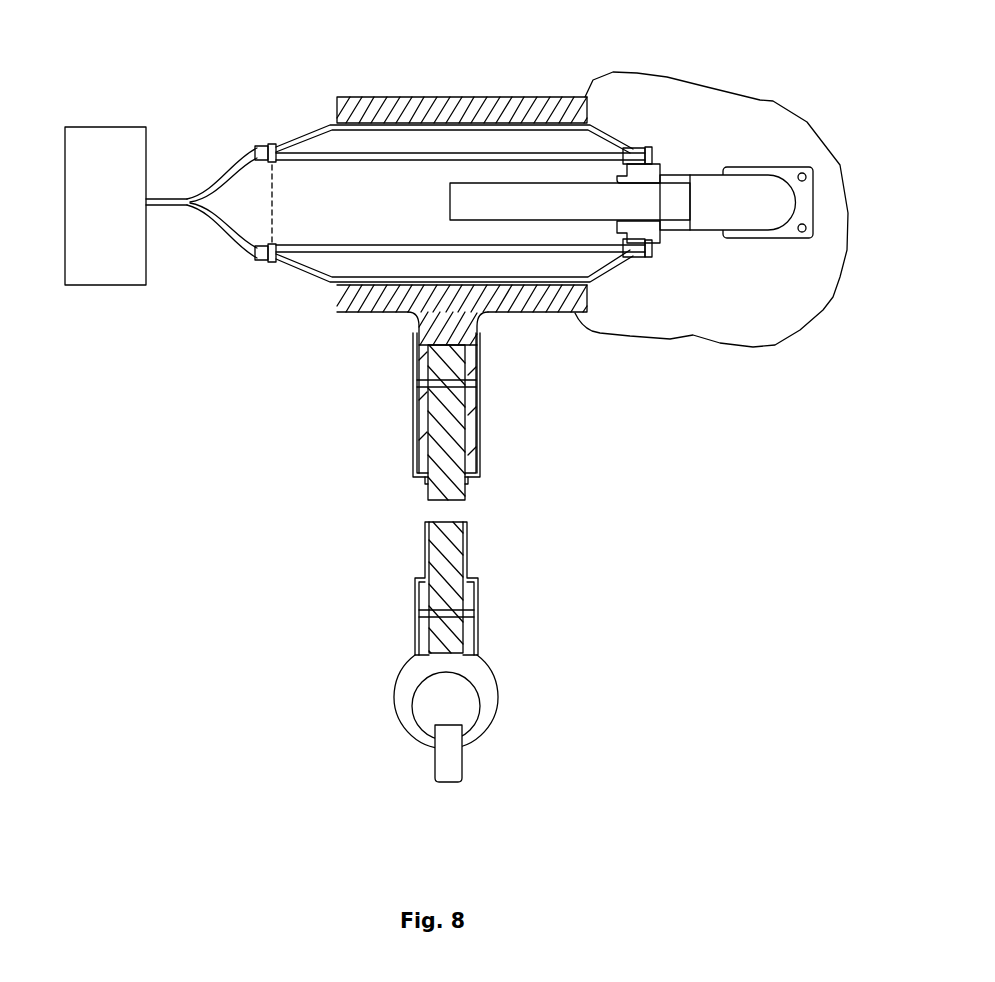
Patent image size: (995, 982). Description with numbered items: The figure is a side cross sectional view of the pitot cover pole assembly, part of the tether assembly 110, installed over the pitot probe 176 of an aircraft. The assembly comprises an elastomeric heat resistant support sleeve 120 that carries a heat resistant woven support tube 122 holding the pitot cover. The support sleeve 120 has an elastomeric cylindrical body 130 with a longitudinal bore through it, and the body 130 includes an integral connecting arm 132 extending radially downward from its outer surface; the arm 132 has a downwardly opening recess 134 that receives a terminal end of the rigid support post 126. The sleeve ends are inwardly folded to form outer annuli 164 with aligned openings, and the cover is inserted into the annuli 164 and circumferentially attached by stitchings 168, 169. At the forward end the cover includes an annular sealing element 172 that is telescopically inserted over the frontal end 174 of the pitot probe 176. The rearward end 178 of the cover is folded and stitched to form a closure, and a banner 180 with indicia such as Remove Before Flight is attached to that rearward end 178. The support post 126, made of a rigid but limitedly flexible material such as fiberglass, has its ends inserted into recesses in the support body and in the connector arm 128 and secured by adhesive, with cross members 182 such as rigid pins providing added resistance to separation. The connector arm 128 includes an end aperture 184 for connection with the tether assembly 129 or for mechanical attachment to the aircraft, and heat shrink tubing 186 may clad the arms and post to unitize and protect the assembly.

The tether assembly 110 is at (208, 500).
The support sleeve 120 is at (483, 95).
The support tube 122 is at (318, 136).
The support post 126 is at (445, 447).
The connector arm 128 is at (497, 702).
The tether assembly 129 is at (450, 762).
The cylindrical body 130 is at (402, 97).
The connecting arm 132 is at (433, 322).
The recess 134 is at (435, 408).
The outer annuli 164 is at (262, 145).
The stitching 168 is at (273, 150).
The stitching 169 is at (647, 148).
The annular sealing element 172 is at (635, 172).
The frontal end 174 is at (523, 207).
The pitot probe 176 is at (708, 234).
The rearward end 178 is at (178, 195).
The banner 180 is at (107, 137).
The cross members 182 is at (472, 385).
The end aperture 184 is at (428, 713).
The sleeve 186 is at (481, 397).